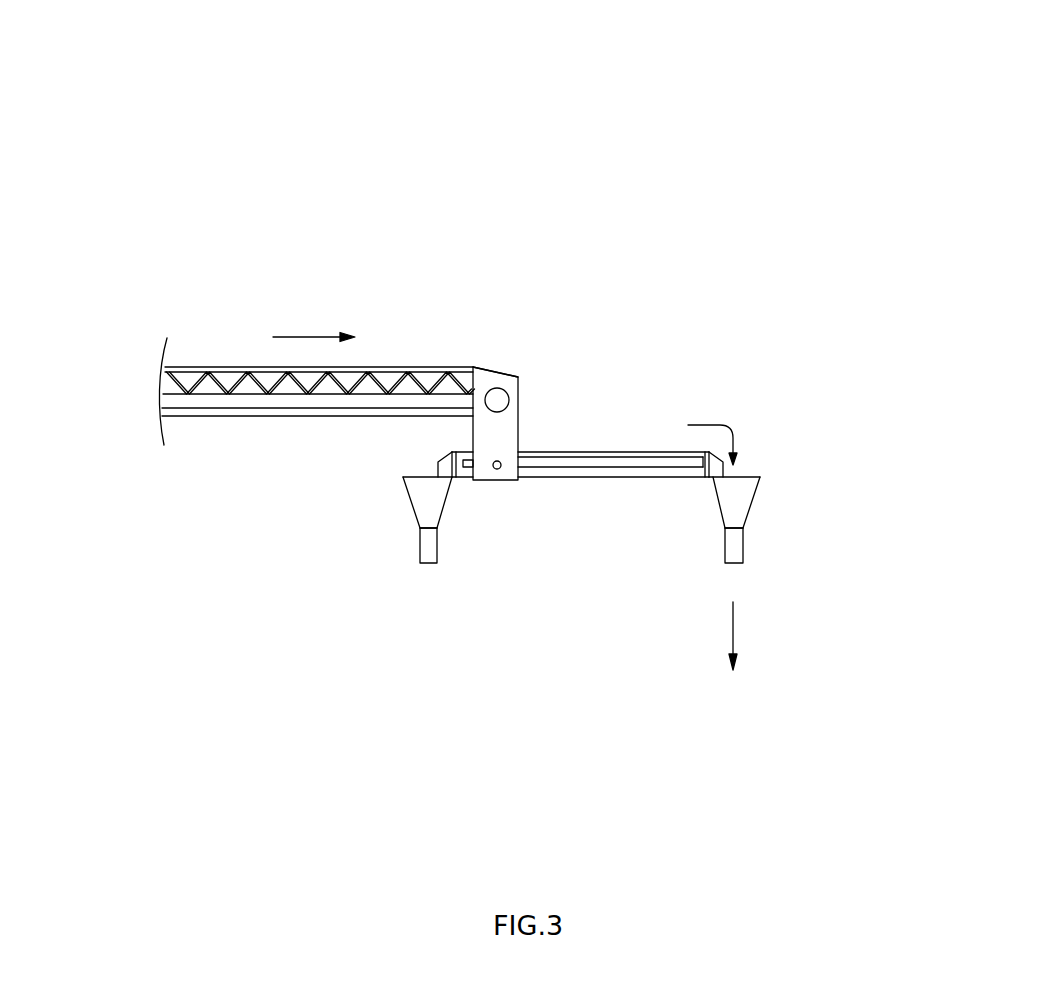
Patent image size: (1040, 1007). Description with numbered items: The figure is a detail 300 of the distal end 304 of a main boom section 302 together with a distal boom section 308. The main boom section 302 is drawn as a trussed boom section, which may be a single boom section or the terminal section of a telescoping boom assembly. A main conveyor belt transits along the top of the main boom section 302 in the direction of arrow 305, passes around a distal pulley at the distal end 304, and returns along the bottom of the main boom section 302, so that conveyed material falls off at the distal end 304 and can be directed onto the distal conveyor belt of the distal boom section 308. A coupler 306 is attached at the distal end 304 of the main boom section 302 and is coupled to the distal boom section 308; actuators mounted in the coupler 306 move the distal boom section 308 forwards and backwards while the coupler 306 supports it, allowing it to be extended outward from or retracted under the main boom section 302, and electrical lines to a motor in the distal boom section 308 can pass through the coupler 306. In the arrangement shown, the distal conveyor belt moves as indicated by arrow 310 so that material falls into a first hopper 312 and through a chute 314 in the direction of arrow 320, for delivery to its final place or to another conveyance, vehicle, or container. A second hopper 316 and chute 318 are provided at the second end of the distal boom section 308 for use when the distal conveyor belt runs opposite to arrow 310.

The detail 300 is at (1015, 38).
The main boom section 302 is at (191, 367).
The distal end 304 is at (473, 367).
The arrow 305 is at (305, 337).
The coupler 306 is at (518, 377).
The distal boom section 308 is at (598, 478).
The arrow 310 is at (712, 425).
The first hopper 312 is at (752, 500).
The chute 314 is at (744, 548).
The second hopper 316 is at (403, 477).
The chute 318 is at (418, 550).
The arrow 320 is at (733, 627).